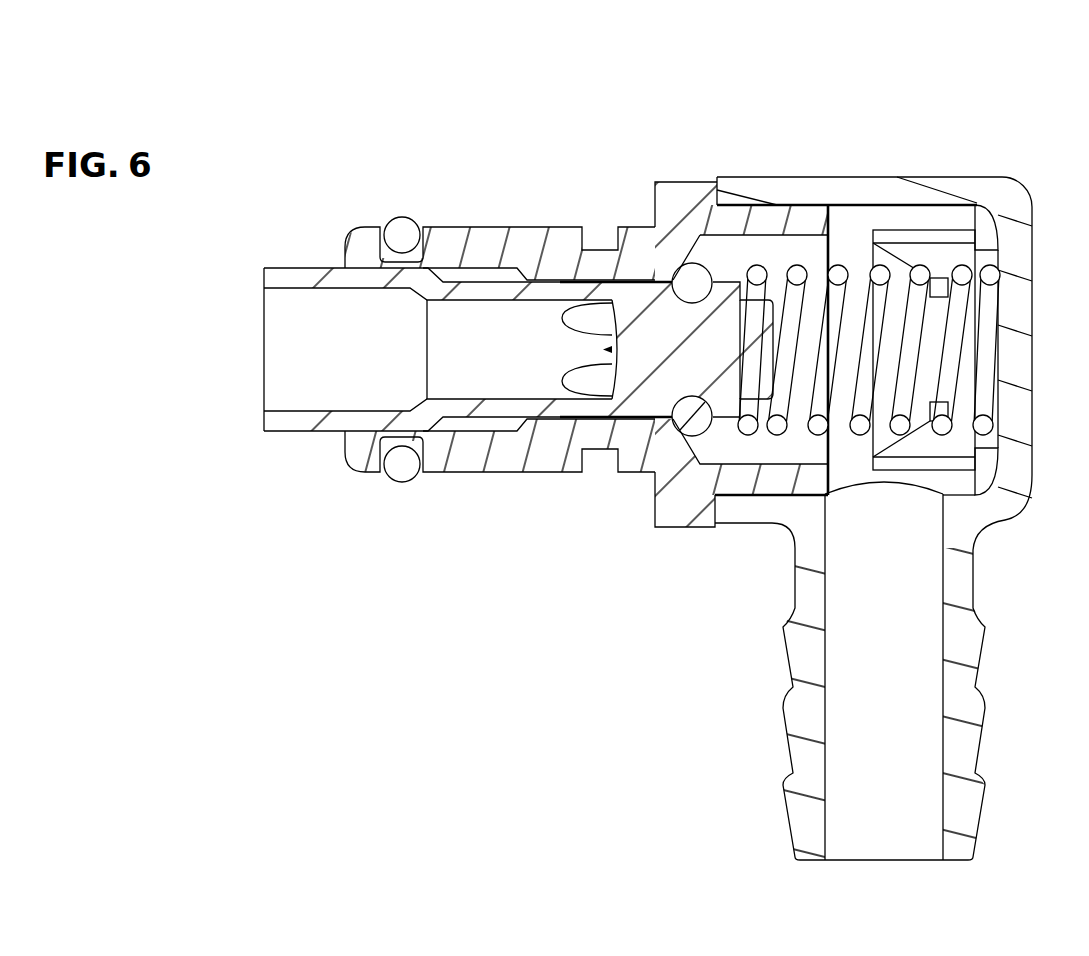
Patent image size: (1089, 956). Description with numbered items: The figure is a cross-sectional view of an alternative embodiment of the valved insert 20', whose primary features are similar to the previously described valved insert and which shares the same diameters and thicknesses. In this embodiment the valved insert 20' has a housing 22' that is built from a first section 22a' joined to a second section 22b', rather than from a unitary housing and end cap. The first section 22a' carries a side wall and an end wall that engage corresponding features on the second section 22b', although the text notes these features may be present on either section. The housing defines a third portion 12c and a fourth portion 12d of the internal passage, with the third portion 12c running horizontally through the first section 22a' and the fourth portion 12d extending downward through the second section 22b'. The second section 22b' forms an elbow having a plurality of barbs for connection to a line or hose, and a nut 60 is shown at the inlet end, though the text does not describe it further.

The valved insert 20' is at (664, 441).
The retention nut 60 is at (308, 257).
The first section 22a' is at (625, 326).
The housing 22' is at (776, 335).
The second section 22b' is at (889, 671).
The third portion 12c is at (352, 359).
The fourth portion 12d is at (905, 715).